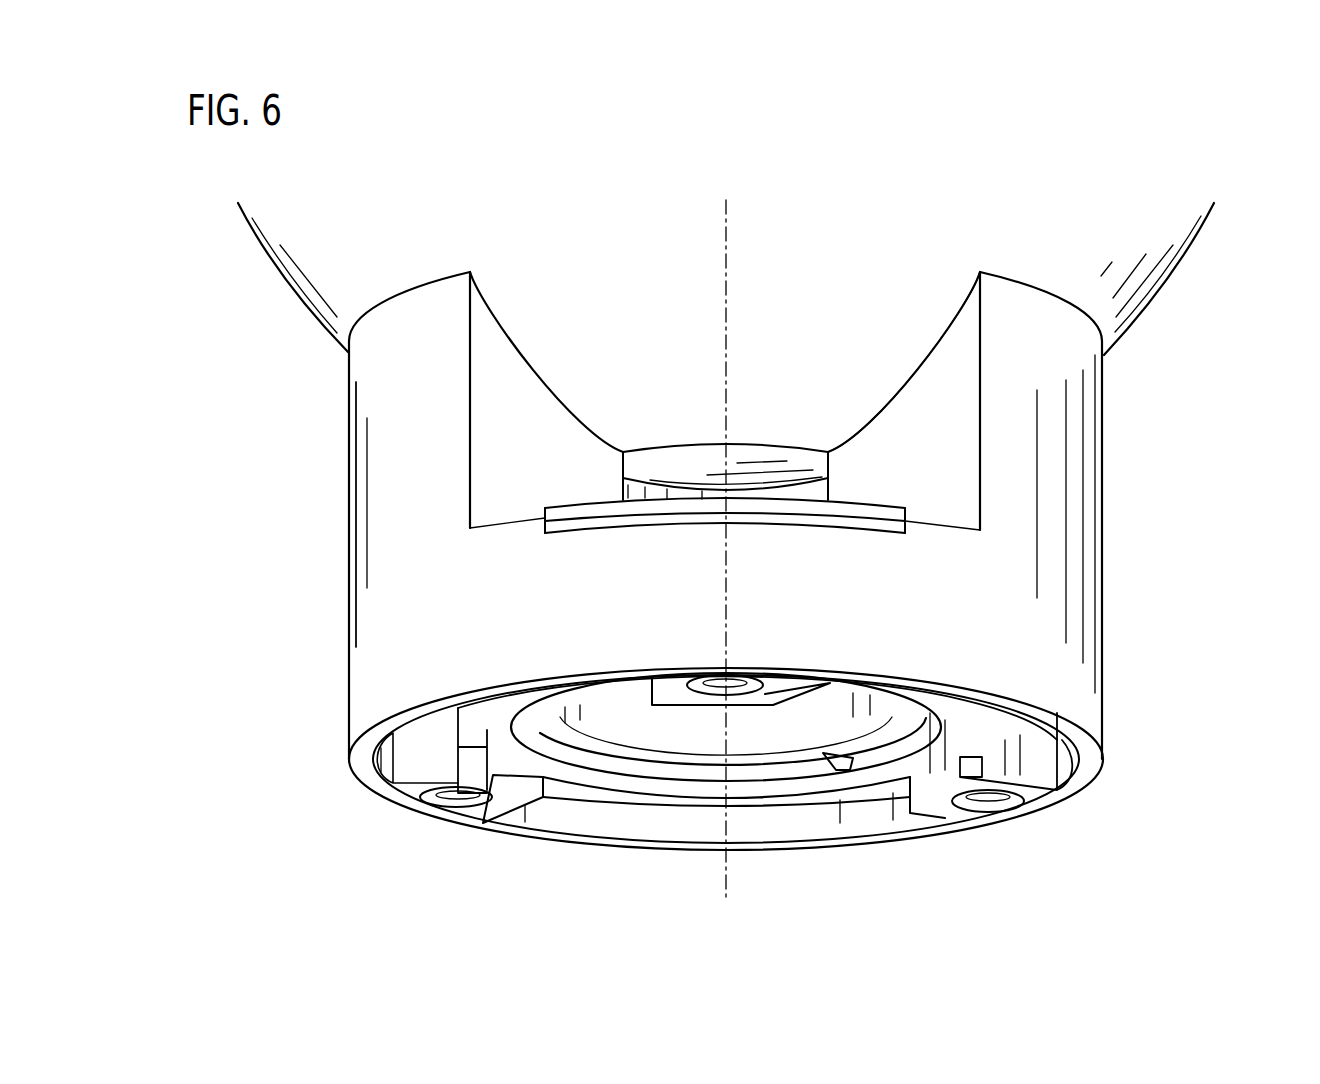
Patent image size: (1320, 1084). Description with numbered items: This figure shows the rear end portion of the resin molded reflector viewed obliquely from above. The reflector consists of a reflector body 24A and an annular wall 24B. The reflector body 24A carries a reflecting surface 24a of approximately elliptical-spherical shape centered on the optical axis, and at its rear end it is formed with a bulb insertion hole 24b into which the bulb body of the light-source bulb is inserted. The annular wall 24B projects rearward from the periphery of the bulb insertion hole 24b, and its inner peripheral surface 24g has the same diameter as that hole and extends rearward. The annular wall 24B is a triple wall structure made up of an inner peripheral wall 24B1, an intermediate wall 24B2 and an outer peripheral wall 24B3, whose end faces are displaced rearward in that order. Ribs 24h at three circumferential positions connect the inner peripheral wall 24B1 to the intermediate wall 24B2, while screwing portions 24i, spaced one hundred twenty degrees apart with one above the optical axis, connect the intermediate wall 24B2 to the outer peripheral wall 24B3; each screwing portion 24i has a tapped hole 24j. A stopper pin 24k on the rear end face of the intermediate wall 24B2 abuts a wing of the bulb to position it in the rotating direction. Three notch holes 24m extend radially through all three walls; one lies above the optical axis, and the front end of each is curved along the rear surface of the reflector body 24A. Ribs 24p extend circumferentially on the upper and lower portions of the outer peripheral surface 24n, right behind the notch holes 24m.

The reflector body 24A is at (1172, 290).
The annular wall 24B is at (1107, 488).
The inner peripheral wall 24B1 is at (753, 760).
The intermediate wall 24B2 is at (843, 800).
The outer peripheral wall 24B3 is at (919, 849).
The reflecting surface 24a is at (667, 463).
The bulb insertion hole 24b is at (801, 490).
The inner peripheral surface 24g is at (627, 725).
The ribs 24h is at (837, 768).
The screwing portions 24i is at (787, 694).
The tapped hole 24j is at (740, 690).
The stopper pin 24k is at (472, 800).
The notch holes 24m is at (868, 448).
The outer peripheral surface 24n is at (386, 478).
The ribs 24p is at (589, 512).